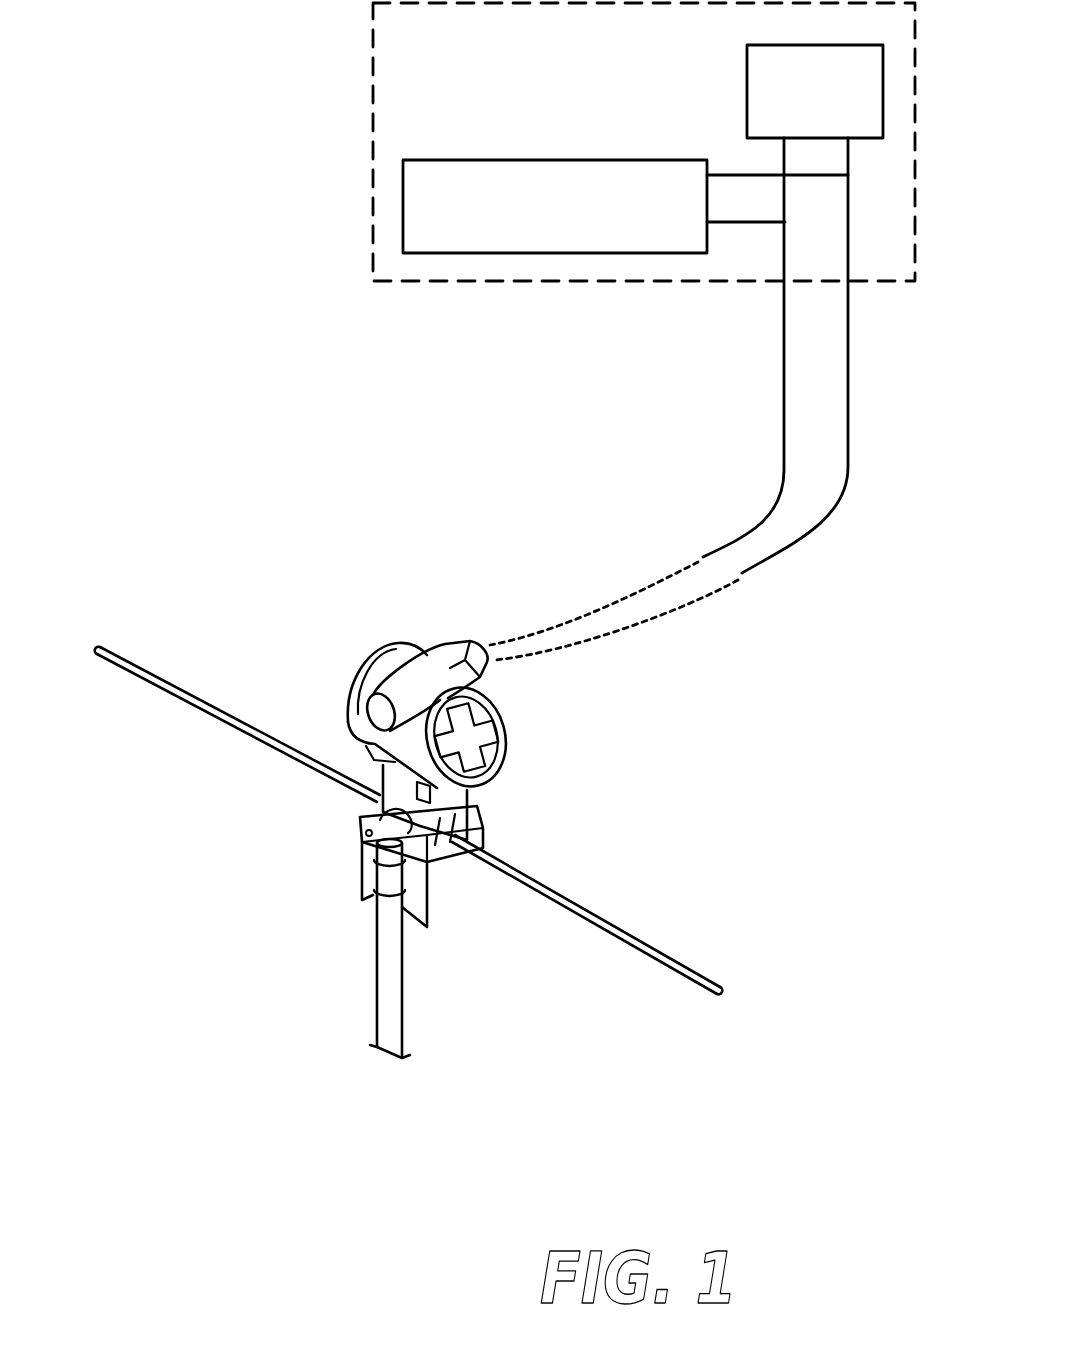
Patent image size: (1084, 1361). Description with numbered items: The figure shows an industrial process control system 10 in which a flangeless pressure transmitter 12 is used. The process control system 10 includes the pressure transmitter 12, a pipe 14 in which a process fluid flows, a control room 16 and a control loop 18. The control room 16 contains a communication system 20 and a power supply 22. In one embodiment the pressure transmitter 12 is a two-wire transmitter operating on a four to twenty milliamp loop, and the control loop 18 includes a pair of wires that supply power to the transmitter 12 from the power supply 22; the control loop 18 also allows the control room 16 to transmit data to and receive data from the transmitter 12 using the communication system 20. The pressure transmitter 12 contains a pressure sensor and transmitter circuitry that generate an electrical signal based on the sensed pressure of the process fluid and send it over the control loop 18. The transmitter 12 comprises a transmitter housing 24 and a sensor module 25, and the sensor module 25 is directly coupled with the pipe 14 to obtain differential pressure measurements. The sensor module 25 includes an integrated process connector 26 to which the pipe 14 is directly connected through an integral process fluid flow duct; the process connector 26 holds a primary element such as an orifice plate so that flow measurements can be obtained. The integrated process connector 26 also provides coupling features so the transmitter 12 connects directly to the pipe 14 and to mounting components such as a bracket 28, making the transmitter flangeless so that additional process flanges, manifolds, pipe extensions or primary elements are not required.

The industrial process control system 10 is at (235, 421).
The flangeless pressure transmitter 12 is at (468, 636).
The pipe 14 is at (193, 702).
The control room 16 is at (373, 152).
The control loop 18 is at (786, 452).
The communication system 20 is at (452, 160).
The power supply 22 is at (747, 93).
The transmitter housing 24 is at (480, 786).
The sensor module 25 is at (503, 845).
The integrated process connector 26 is at (480, 828).
The bracket 28 is at (333, 870).